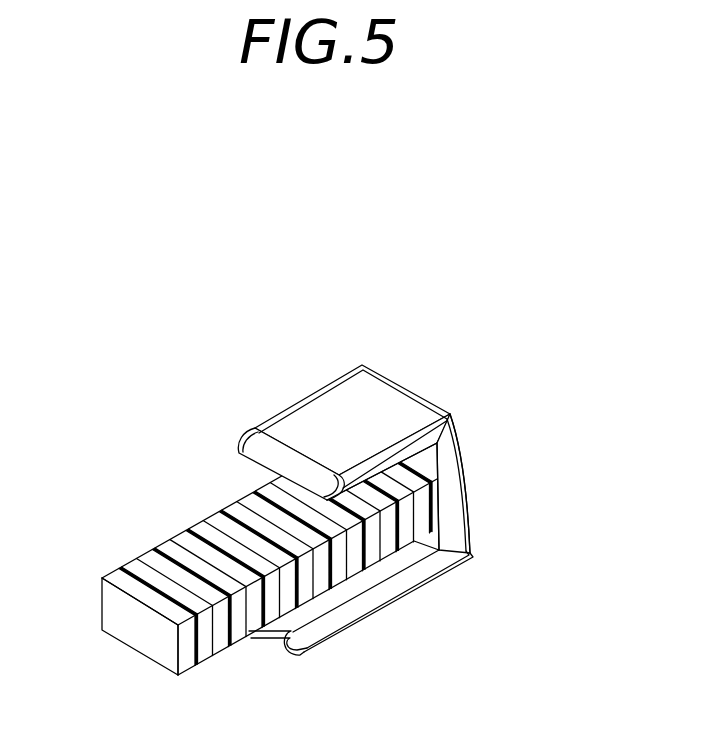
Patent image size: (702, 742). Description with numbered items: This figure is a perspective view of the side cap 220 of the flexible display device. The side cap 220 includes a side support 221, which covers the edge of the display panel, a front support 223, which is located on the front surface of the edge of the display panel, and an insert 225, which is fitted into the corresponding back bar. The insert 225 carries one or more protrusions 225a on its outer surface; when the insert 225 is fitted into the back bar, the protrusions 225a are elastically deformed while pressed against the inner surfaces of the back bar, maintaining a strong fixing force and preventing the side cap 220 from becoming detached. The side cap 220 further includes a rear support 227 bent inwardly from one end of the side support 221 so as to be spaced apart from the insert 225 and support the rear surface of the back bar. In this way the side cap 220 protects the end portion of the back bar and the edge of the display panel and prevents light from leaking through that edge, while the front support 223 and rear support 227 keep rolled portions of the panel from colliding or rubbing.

The side cap 220 is at (107, 258).
The side support 221 is at (403, 485).
The front support 223 is at (355, 405).
The insert 225 is at (140, 631).
The protrusion 225a is at (204, 644).
The rear support 227 is at (410, 578).